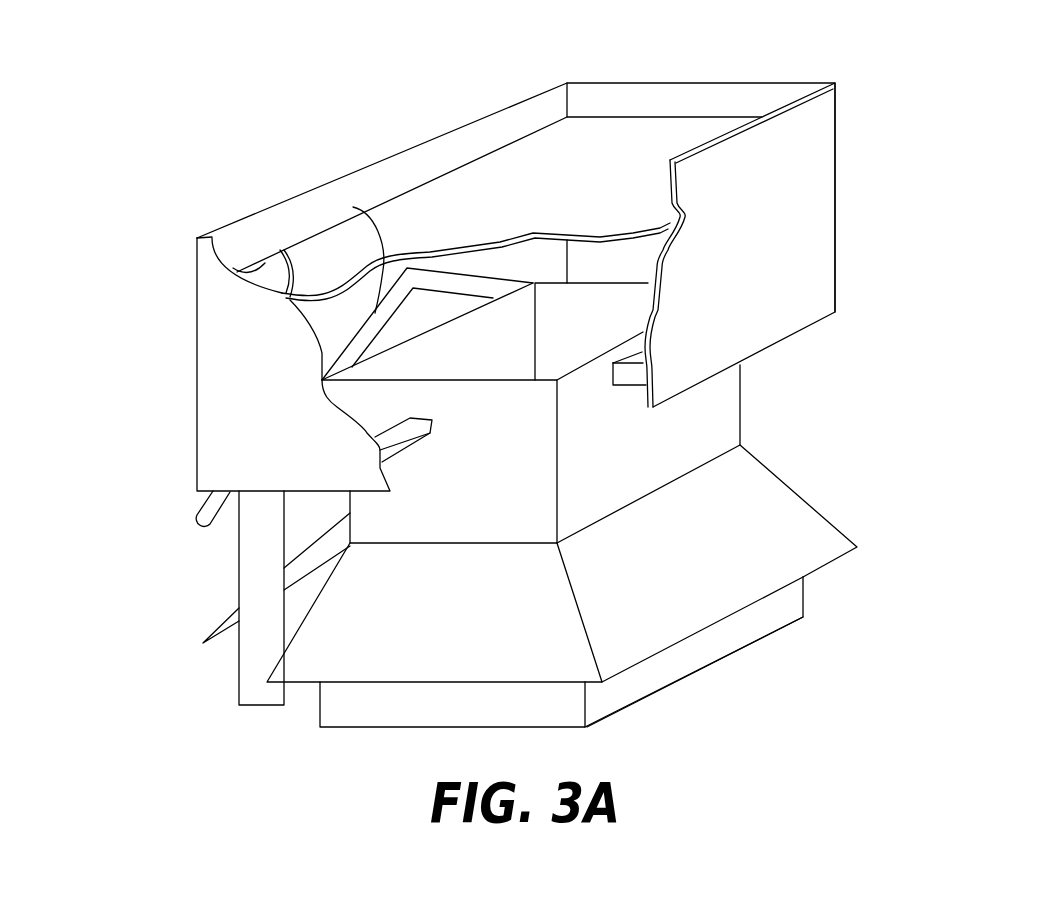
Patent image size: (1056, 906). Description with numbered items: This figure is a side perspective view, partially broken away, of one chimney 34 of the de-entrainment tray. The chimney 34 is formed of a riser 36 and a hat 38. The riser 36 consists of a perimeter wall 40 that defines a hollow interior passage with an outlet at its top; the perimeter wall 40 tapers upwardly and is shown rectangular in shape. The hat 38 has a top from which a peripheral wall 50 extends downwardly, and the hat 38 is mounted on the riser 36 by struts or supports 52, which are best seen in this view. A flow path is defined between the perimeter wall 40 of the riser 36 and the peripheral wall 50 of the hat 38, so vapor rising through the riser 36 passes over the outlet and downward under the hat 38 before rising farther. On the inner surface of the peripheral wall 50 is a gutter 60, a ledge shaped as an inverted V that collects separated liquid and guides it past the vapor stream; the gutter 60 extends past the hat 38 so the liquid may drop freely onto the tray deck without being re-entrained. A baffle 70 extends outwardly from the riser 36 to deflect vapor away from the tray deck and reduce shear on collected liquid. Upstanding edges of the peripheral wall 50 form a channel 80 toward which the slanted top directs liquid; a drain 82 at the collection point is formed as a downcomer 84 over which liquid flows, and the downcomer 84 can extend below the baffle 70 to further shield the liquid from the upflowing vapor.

The chimney 34 is at (916, 131).
The riser 36 is at (815, 483).
The hat 38 is at (776, 57).
The perimeter wall 40 is at (726, 422).
The peripheral wall 50 is at (815, 265).
The struts or supports 52 is at (416, 440).
The gutter 60 is at (353, 207).
The baffle 70 is at (713, 590).
The channel 80 is at (588, 189).
The drain 82 is at (265, 263).
The downspout or downcomer 84 is at (257, 578).